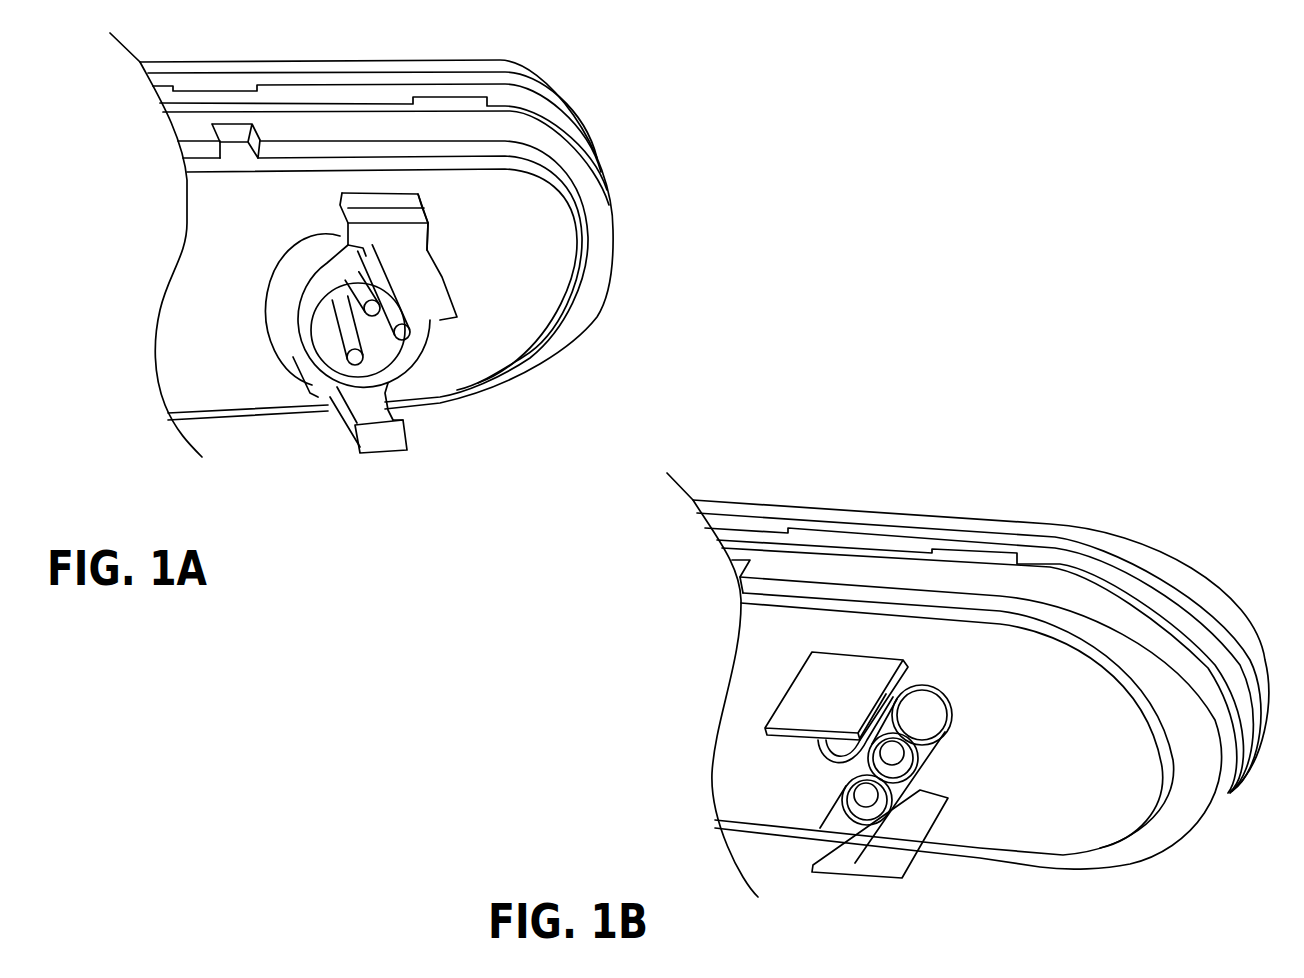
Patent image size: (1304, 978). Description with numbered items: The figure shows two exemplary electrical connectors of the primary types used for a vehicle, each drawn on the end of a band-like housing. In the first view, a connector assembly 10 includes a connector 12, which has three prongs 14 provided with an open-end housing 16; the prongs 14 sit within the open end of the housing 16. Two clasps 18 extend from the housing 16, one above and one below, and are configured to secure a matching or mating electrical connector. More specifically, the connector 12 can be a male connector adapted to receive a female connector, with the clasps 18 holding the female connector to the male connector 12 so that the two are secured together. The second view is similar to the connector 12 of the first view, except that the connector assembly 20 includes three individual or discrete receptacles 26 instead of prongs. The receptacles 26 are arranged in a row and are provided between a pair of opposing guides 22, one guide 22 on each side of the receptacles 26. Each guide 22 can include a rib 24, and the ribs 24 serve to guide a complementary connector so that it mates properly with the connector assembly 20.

In FIG. 1A, the connector assembly 10 is at (665, 47).
In FIG. 1A, the connector 12 is at (421, 362).
In FIG. 1A, the prongs 14 is at (355, 367).
In FIG. 1A, the open-end housing 16 is at (423, 345).
In FIG. 1A, the clasps 18 is at (375, 440).
In FIG. 1B, the connector assembly 20 is at (982, 445).
In FIG. 1B, the guides 22 is at (853, 698).
In FIG. 1B, the rib 24 is at (818, 742).
In FIG. 1B, the receptacles 26 is at (850, 780).